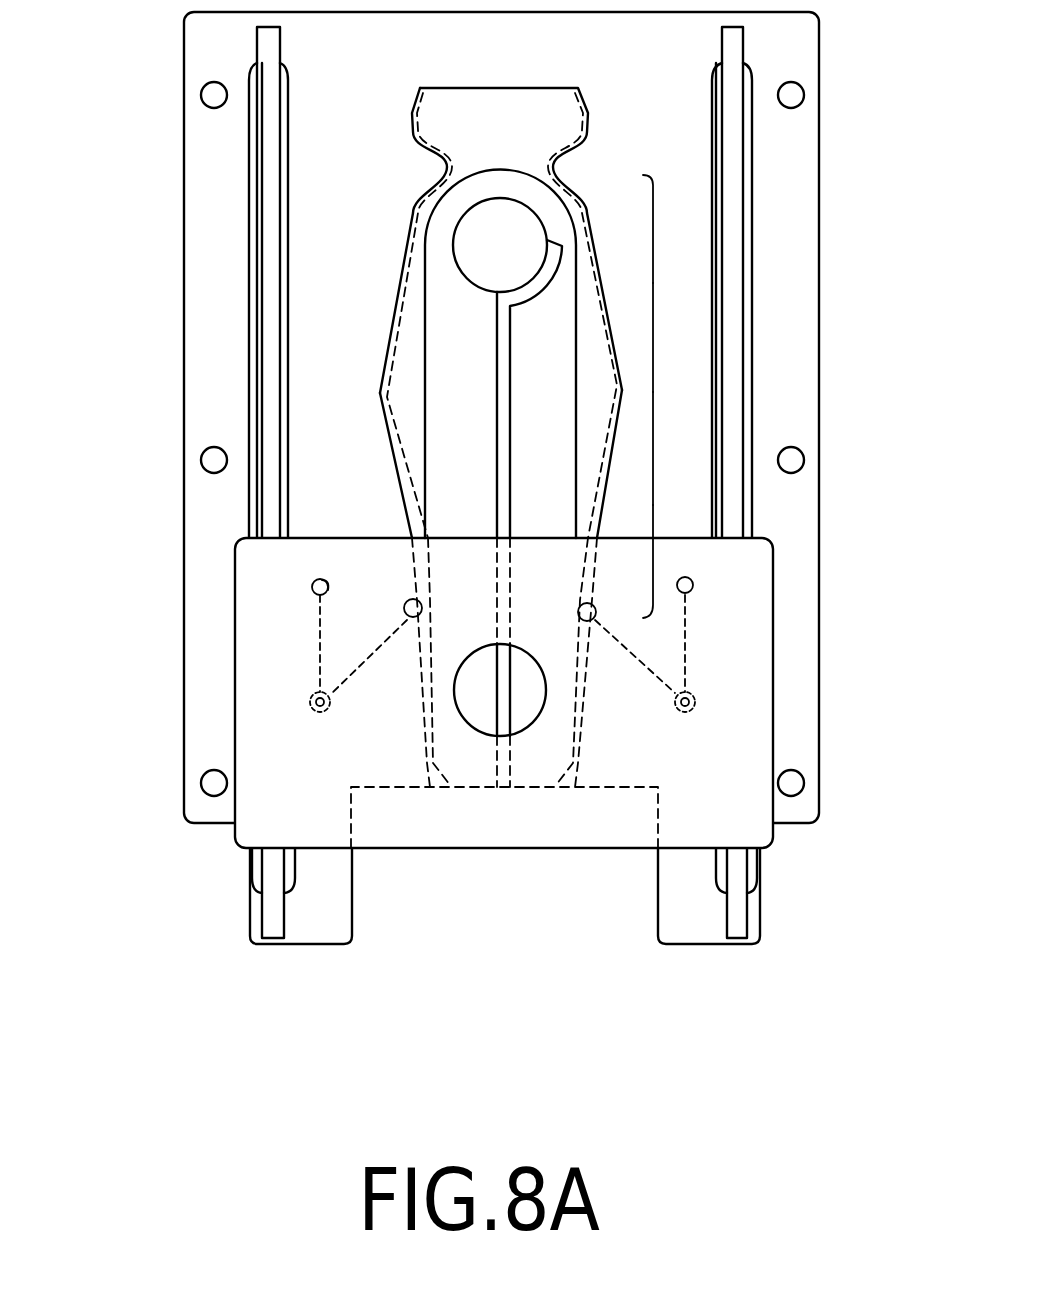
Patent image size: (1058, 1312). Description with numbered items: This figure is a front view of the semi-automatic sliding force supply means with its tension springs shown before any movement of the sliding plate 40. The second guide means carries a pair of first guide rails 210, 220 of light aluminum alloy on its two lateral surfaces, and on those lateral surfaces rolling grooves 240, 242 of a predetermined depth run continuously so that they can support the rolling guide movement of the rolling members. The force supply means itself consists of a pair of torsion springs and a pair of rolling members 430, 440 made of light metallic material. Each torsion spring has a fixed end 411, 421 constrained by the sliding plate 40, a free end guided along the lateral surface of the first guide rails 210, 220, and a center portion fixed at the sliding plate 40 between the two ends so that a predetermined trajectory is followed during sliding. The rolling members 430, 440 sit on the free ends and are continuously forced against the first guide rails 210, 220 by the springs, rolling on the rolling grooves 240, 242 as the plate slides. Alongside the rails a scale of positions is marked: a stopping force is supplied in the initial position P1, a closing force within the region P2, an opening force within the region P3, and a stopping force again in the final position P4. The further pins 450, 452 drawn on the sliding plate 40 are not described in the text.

The sliding plate 40 is at (600, 862).
The first guide rail 210 is at (380, 393).
The first guide rail 220 is at (622, 390).
The rolling groove 240 is at (400, 288).
The rolling groove 242 is at (598, 282).
The fixed end 411 is at (310, 587).
The fixed end 421 is at (697, 580).
The rolling member 430 is at (405, 610).
The rolling member 440 is at (590, 608).
The left lower pin 450 is at (308, 712).
The right lower pin 452 is at (693, 710).
The initial position P1 is at (590, 614).
The closing force region P2 is at (655, 505).
The opening force region P3 is at (655, 283).
The final position P4 is at (562, 158).